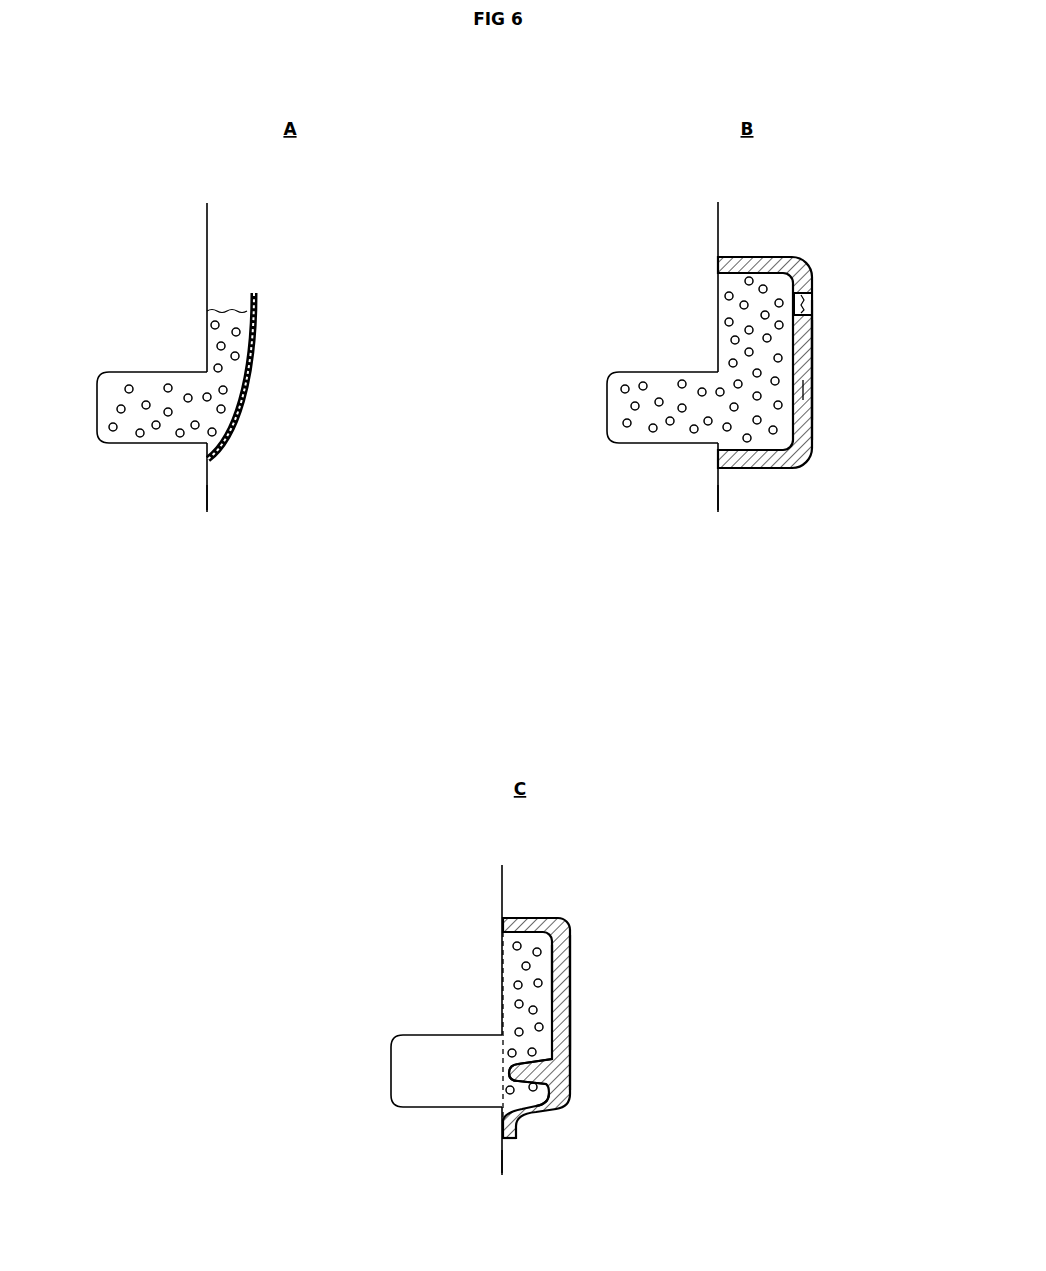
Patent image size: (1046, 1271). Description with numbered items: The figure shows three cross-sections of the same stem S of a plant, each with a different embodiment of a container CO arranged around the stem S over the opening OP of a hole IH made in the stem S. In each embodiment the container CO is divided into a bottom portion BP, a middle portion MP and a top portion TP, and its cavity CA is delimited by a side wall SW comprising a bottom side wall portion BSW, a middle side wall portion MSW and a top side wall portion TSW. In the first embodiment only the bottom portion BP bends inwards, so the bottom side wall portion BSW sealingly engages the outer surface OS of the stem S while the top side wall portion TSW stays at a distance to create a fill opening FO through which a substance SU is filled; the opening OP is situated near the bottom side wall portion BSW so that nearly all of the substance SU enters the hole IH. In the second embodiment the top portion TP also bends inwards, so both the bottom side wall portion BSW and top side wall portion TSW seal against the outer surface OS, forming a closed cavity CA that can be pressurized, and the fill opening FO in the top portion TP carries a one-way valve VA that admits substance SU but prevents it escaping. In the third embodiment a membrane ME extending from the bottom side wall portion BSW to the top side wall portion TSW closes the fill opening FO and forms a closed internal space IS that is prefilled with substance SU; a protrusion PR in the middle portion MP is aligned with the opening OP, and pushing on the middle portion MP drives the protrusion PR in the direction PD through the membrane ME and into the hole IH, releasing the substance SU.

In FIG. 6A, the stem S is at (158, 357).
In FIG. 6B, the stem S is at (669, 357).
In FIG. 6C, the stem S is at (452, 1020).
In FIG. 6A, the hole IH is at (133, 417).
In FIG. 6B, the hole IH is at (645, 416).
In FIG. 6C, the hole IH is at (427, 1078).
In FIG. 6A, the outer surface OS is at (209, 496).
In FIG. 6B, the outer surface OS is at (720, 496).
In FIG. 6C, the outer surface OS is at (505, 1158).
In FIG. 6B, the substance SU is at (757, 325).
In FIG. 6C, the substance SU is at (517, 938).
In FIG. 6B, the fill opening FO is at (816, 265).
In FIG. 6C, the fill opening FO is at (500, 977).
In FIG. 6B, the top side wall portion TSW is at (775, 262).
In FIG. 6C, the top side wall portion TSW is at (548, 920).
In FIG. 6B, the one-way valve VA is at (803, 307).
In FIG. 6B, the opening OP is at (725, 401).
In FIG. 6C, the opening OP is at (498, 1063).
In FIG. 6B, the middle side wall portion MSW is at (806, 360).
In FIG. 6C, the middle side wall portion MSW is at (566, 1027).
In FIG. 6B, the container CO is at (806, 390).
In FIG. 6C, the container CO is at (547, 1105).
In FIG. 6B, the side wall SW is at (810, 423).
In FIG. 6C, the side wall SW is at (562, 983).
In FIG. 6B, the bottom side wall portion BSW is at (772, 468).
In FIG. 6C, the bottom side wall portion BSW is at (518, 1133).
In FIG. 6B, the cavity CA is at (748, 430).
In FIG. 6B, the top portion TP is at (881, 257).
In FIG. 6C, the top portion TP is at (627, 912).
In FIG. 6B, the middle portion MP is at (881, 315).
In FIG. 6C, the middle portion MP is at (627, 972).
In FIG. 6B, the bottom portion BP is at (881, 425).
In FIG. 6C, the bottom portion BP is at (627, 1112).
In FIG. 6C, the membrane ME is at (501, 950).
In FIG. 6C, the internal space IS is at (542, 966).
In FIG. 6C, the protrusion PR is at (528, 1072).
In FIG. 6C, the direction PD is at (658, 1083).